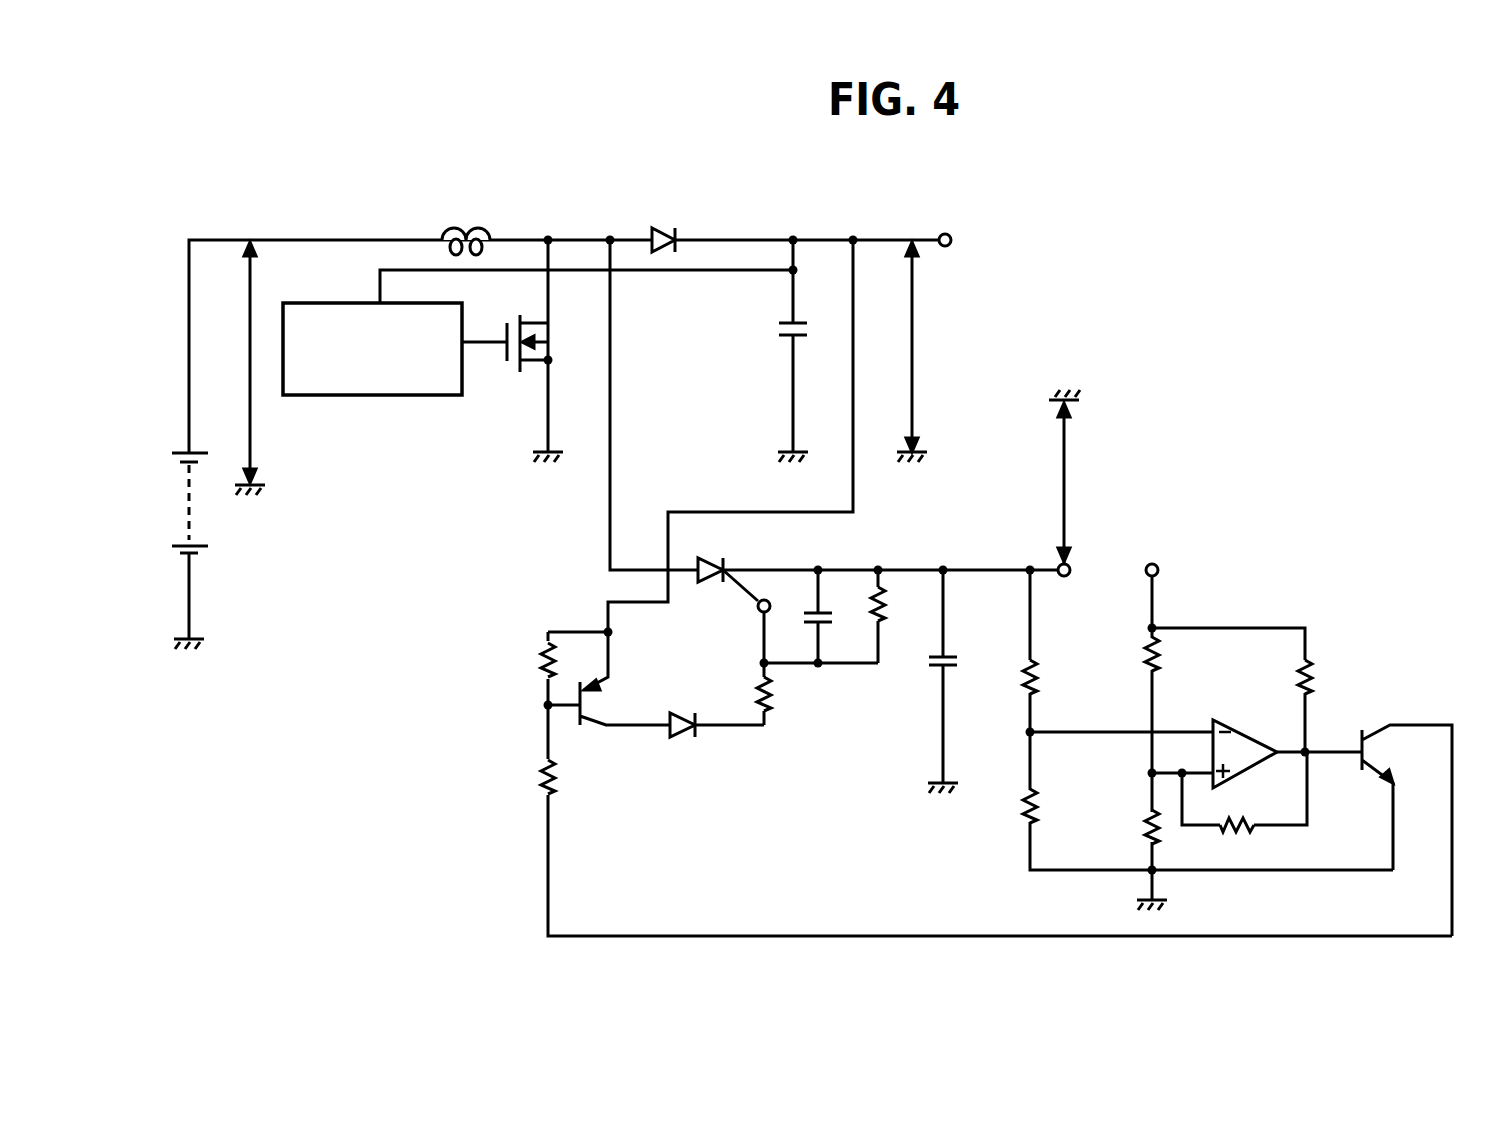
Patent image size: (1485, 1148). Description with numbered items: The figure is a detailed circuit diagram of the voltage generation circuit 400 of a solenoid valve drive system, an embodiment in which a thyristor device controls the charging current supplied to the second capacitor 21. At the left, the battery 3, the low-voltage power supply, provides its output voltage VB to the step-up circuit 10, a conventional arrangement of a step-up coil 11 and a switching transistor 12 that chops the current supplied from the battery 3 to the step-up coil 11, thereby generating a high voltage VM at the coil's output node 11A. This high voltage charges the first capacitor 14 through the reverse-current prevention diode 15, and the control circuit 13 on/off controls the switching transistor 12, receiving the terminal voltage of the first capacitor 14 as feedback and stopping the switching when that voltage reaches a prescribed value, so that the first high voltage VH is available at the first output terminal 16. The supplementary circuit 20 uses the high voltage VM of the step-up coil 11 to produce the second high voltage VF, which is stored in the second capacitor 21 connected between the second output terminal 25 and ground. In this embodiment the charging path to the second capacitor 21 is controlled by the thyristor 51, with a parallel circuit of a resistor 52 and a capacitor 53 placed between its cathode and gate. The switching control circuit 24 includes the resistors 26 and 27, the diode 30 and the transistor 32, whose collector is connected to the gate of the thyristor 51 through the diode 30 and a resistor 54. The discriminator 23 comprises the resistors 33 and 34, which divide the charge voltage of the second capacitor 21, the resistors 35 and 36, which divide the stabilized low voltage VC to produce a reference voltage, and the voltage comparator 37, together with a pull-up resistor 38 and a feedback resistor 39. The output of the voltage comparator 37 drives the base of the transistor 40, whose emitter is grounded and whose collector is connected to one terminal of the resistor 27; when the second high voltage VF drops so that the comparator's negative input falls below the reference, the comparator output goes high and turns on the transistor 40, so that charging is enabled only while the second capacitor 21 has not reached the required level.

The battery 3 is at (190, 500).
The step-up circuit 10 is at (590, 222).
The step-up coil 11 is at (462, 231).
The connection node 11A is at (548, 236).
The switching transistor 12 is at (516, 366).
The control circuit 13 is at (380, 396).
The first capacitor 14 is at (779, 332).
The reverse-current prevention diode 15 is at (672, 229).
The first output terminal 16 is at (947, 234).
The supplementary circuit 20 is at (1268, 602).
The second capacitor 21 is at (959, 659).
The discriminator 23 is at (1333, 717).
The switching control circuit 24 is at (540, 708).
The second output terminal 25 is at (1066, 577).
The resistor 26 is at (538, 658).
The resistor 27 is at (537, 778).
The diode 30 is at (684, 735).
The transistor 32 is at (592, 700).
The resistor 33 is at (1043, 666).
The resistor 34 is at (1024, 802).
The resistor 35 is at (1164, 654).
The resistor 36 is at (1145, 826).
The voltage comparator 37 is at (1240, 774).
The pull-up resistor 38 is at (1311, 659).
The feedback resistor 39 is at (1246, 836).
The transistor 40 is at (1380, 748).
The thyristor 51 is at (716, 561).
The resistor 52 is at (887, 594).
The capacitor 53 is at (830, 616).
The resistor 54 is at (779, 687).
The voltage generation circuit 400 is at (1107, 297).